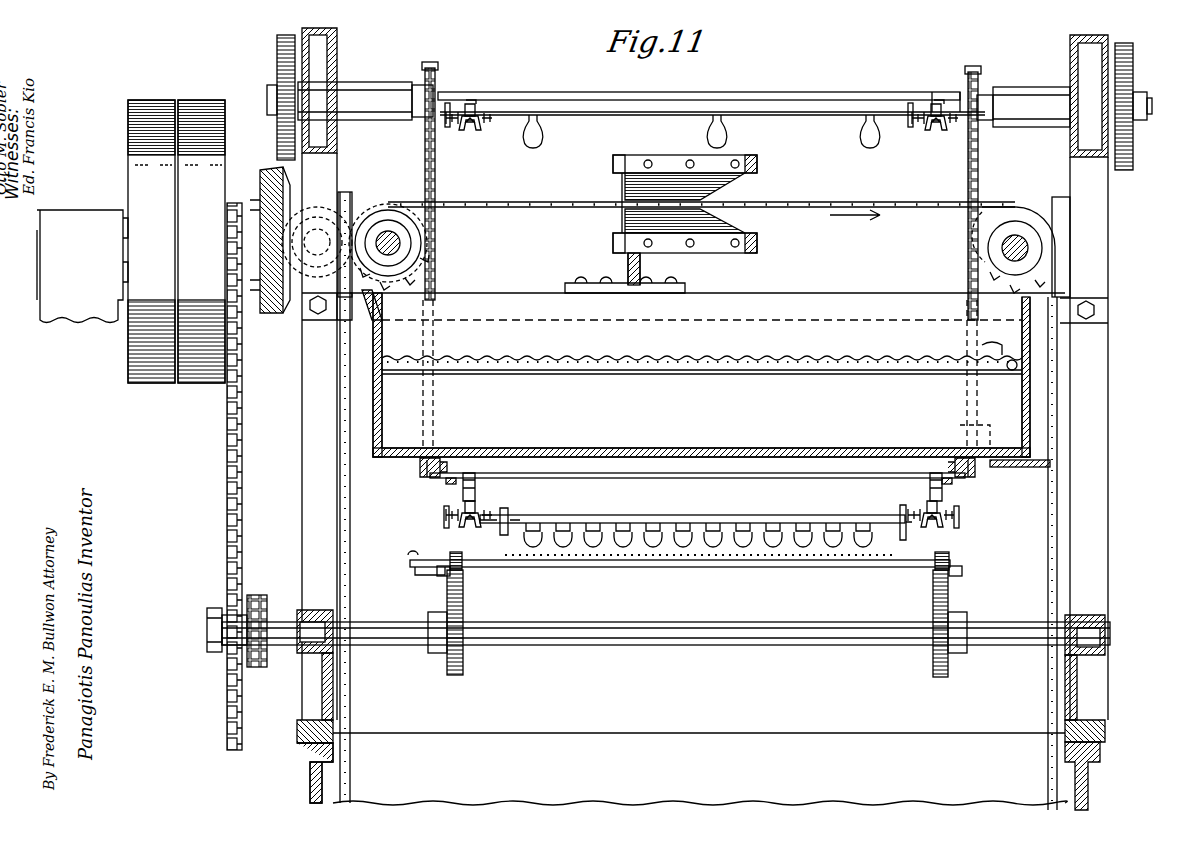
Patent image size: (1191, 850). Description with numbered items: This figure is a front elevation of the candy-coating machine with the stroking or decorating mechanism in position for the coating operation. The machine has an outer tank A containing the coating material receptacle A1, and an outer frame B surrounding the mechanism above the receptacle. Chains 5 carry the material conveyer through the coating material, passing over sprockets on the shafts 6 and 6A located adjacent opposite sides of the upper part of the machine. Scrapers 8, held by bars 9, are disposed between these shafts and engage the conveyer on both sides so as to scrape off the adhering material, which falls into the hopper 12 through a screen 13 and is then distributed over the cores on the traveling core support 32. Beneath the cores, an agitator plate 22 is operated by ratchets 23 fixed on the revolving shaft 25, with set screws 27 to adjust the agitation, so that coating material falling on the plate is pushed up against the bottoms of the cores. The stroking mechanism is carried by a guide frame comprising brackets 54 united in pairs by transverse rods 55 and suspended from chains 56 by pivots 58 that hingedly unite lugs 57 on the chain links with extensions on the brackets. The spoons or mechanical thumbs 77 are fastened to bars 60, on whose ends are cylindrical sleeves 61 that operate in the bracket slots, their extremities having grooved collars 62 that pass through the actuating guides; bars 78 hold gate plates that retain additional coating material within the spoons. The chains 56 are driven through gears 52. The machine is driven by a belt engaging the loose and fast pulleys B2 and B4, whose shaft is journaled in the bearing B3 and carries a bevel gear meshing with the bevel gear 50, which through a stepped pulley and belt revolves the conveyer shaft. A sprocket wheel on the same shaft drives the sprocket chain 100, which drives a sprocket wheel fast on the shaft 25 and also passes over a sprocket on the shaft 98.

The chains 5 is at (515, 212).
The shaft 6 is at (652, 120).
The shaft 6A is at (391, 232).
The scrapers 8 is at (740, 187).
The bars 9 is at (730, 158).
The hopper 12 is at (1022, 340).
The screen 13 is at (855, 358).
The plate 22 is at (912, 568).
The ratchets 23 is at (463, 674).
The shaft 25 is at (610, 647).
The set screws 27 is at (464, 582).
The core support 32 is at (915, 558).
The bevel gear 50 is at (270, 172).
The gears 52 is at (277, 48).
The brackets 54 is at (485, 140).
The transverse rods 55 is at (861, 95).
The chains 56 is at (436, 183).
The lugs 57 is at (304, 200).
The pivots 58 is at (440, 468).
The bars 60 is at (610, 518).
The cylindrical sleeves 61 is at (466, 100).
The grooved collars 62 is at (448, 130).
The spoons 77 is at (545, 140).
The bars 78 is at (752, 560).
The shaft 98 is at (207, 630).
The sprocket chain 100 is at (227, 546).
The outer tank A is at (297, 752).
The coating material receptacle A1 is at (1120, 724).
The outer frame B is at (1108, 250).
The loose pulley B2 is at (146, 100).
The bearing B3 is at (80, 208).
The fast pulley B4 is at (203, 100).